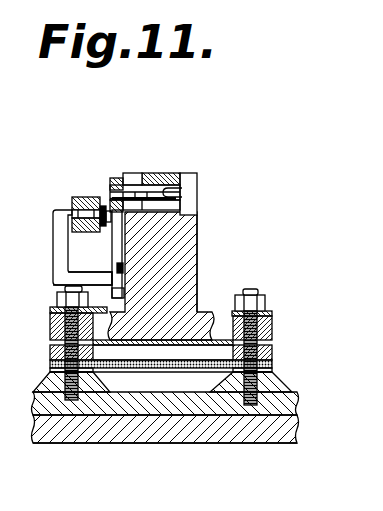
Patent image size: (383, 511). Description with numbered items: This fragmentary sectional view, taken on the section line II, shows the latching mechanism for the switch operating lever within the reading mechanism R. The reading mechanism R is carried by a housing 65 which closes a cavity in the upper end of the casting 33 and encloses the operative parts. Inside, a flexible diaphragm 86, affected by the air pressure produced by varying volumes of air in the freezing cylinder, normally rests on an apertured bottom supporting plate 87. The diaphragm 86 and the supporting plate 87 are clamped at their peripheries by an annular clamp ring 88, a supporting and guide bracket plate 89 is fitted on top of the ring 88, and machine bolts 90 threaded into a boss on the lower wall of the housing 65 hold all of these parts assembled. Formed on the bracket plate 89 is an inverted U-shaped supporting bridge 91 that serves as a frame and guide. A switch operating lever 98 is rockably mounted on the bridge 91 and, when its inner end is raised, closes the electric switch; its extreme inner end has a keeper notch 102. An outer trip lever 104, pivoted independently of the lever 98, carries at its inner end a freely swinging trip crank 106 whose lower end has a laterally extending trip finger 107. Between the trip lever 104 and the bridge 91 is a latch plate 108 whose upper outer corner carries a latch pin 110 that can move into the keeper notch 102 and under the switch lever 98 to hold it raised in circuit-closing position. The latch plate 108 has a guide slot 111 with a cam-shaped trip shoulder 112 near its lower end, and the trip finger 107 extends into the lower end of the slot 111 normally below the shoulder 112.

The casting 33 is at (278, 436).
The housing 65 is at (298, 400).
The flexible diaphragm 86 is at (188, 357).
The bottom supporting plate 87 is at (176, 368).
The annular clamp ring 88 is at (273, 348).
The supporting and guide bracket plate 89 is at (273, 326).
The machine bolts 90 is at (259, 291).
The inverted U-shaped supporting bridge 91 is at (195, 233).
The reading mechanism R is at (204, 275).
The switch operating lever 98 is at (172, 174).
The keeper notch 102 is at (166, 193).
The outer trip lever 104 is at (85, 196).
The trip crank 106 is at (58, 235).
The trip finger 107 is at (86, 277).
The latch plate 108 is at (114, 184).
The latch pin 110 is at (150, 191).
The guide slot 111 is at (109, 239).
The cam shaped trip shoulder 112 is at (117, 268).
The section line II is at (60, 445).